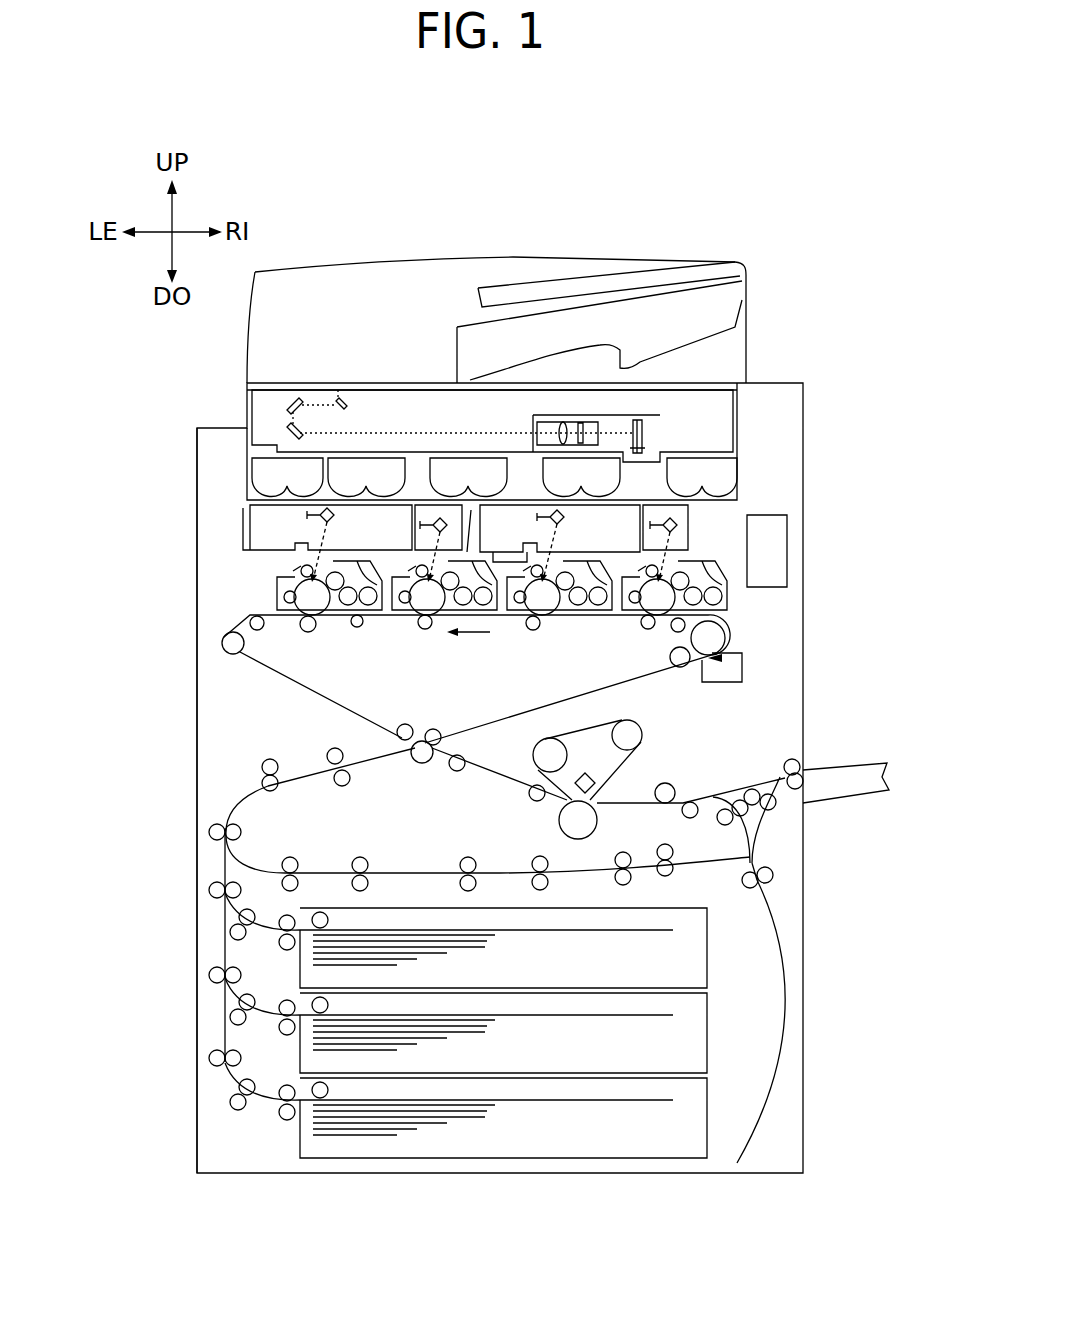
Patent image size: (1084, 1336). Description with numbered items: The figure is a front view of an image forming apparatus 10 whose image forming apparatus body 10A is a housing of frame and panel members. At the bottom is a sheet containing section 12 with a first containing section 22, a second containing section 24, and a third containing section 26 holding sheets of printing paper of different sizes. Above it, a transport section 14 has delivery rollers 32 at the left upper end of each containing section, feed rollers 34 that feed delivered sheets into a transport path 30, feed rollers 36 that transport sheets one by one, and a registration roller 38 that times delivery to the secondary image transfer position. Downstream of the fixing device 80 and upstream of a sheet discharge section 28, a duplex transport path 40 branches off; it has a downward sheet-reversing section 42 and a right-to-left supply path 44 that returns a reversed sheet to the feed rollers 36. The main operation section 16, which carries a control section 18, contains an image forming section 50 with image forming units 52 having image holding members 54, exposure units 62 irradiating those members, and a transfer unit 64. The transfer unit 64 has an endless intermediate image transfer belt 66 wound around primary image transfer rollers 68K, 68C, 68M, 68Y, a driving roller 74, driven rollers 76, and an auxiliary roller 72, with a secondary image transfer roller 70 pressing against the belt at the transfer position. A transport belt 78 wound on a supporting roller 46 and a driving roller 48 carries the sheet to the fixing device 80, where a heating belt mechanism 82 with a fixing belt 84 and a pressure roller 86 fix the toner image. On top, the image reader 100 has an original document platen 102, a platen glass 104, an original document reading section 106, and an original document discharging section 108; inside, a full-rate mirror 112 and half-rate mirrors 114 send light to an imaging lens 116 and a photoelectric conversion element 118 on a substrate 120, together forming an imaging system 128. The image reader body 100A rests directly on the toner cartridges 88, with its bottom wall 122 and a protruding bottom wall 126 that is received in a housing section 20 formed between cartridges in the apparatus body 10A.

The image forming apparatus 10 is at (833, 290).
The image forming apparatus body 10A is at (805, 665).
The sheet containing section 12 is at (711, 1154).
The transport section 14 is at (198, 808).
The main operation section 16 is at (204, 585).
The control section 18 is at (778, 556).
The housing section 20 is at (628, 504).
The first containing section 22 is at (708, 1097).
The second containing section 24 is at (708, 1042).
The third containing section 26 is at (708, 960).
The sheet discharge section 28 is at (840, 766).
The transport path 30 is at (228, 782).
The delivery rollers 32 is at (330, 918).
The feed rollers 34 is at (287, 951).
The feed rollers 36 is at (265, 758).
The registration roller 38 is at (341, 787).
The duplex transport path 40 is at (772, 898).
The sheet-reversing section 42 is at (790, 1012).
The supply path 44 is at (386, 872).
The supporting roller 46 is at (457, 772).
The driving roller 48 is at (537, 802).
The image forming section 50 is at (262, 592).
The image forming unit 52 is at (722, 598).
The image holding member 54 is at (503, 657).
The exposure unit 62 is at (692, 527).
The transfer unit 64 is at (255, 682).
The intermediate image transfer belt 66 is at (533, 710).
The primary image transfer roller 68K is at (313, 622).
The primary image transfer roller 68C is at (424, 630).
The primary image transfer roller 68M is at (533, 630).
The primary image transfer roller 68Y is at (648, 630).
The secondary image transfer roller 70 is at (422, 764).
The auxiliary roller 72 is at (437, 729).
The driving roller 74 is at (726, 640).
The driven rollers 76 is at (224, 652).
The transport belt 78 is at (497, 778).
The fixing device 80 is at (655, 740).
The heating belt mechanism 82 is at (608, 720).
The fixing belt 84 is at (620, 778).
The pressure roller 86 is at (598, 822).
The toner cartridge 88 is at (728, 488).
The image reader 100 is at (393, 255).
The image reader body 100A is at (738, 400).
The original document platen 102 is at (672, 266).
The platen glass 104 is at (268, 383).
The original document reading section 106 is at (745, 425).
The original document discharging section 108 is at (700, 350).
The full-rate mirror 112 is at (347, 406).
The half-rate mirrors 114 is at (283, 403).
The imaging lens 116 is at (545, 420).
The photoelectric conversion element 118 is at (634, 422).
The substrate 120 is at (665, 440).
The bottom wall 122 is at (297, 460).
The protruding bottom wall 126 is at (630, 468).
The imaging system 128 is at (676, 437).